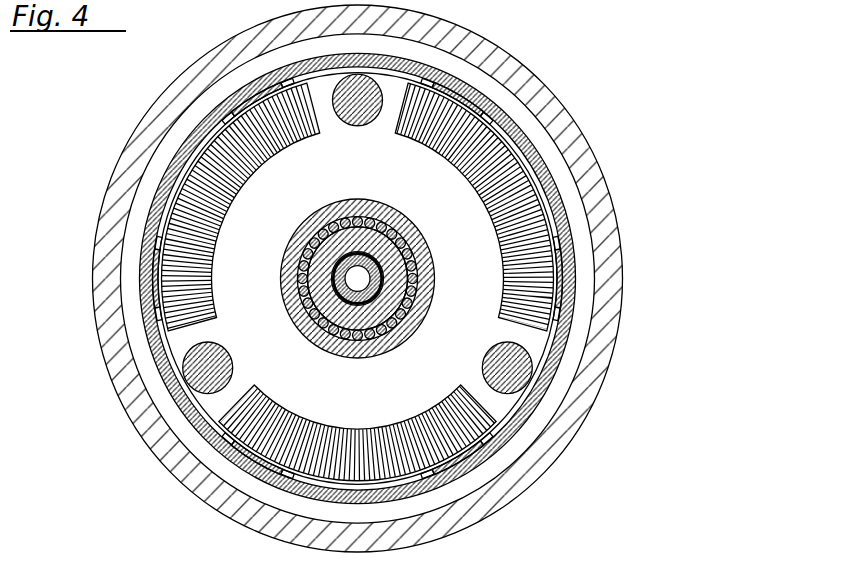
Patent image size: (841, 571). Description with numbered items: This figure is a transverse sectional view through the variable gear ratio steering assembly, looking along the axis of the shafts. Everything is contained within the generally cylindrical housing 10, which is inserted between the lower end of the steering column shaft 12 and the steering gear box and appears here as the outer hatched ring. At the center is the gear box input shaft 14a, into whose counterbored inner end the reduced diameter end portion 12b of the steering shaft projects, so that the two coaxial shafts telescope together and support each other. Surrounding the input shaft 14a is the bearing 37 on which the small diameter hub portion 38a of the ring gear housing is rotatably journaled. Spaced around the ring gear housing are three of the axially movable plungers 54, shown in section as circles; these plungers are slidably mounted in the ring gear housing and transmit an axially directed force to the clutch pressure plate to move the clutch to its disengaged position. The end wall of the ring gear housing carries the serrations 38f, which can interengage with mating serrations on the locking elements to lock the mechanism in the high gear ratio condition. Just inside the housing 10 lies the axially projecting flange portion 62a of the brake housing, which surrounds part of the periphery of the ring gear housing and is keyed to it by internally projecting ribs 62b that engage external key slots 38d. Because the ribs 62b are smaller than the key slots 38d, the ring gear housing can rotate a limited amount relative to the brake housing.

The housing 10 is at (176, 478).
The steering column shaft 12 is at (39, 552).
The reduced diameter end portion 12b is at (374, 287).
The gear box input shaft 14a is at (392, 300).
The bearing 37 is at (403, 340).
The hub portion 38a is at (412, 221).
The key slots 38d is at (290, 77).
The serrations 38f is at (430, 143).
The plungers 54 is at (359, 76).
The flange portion 62a is at (533, 409).
The ribs 62b is at (237, 100).